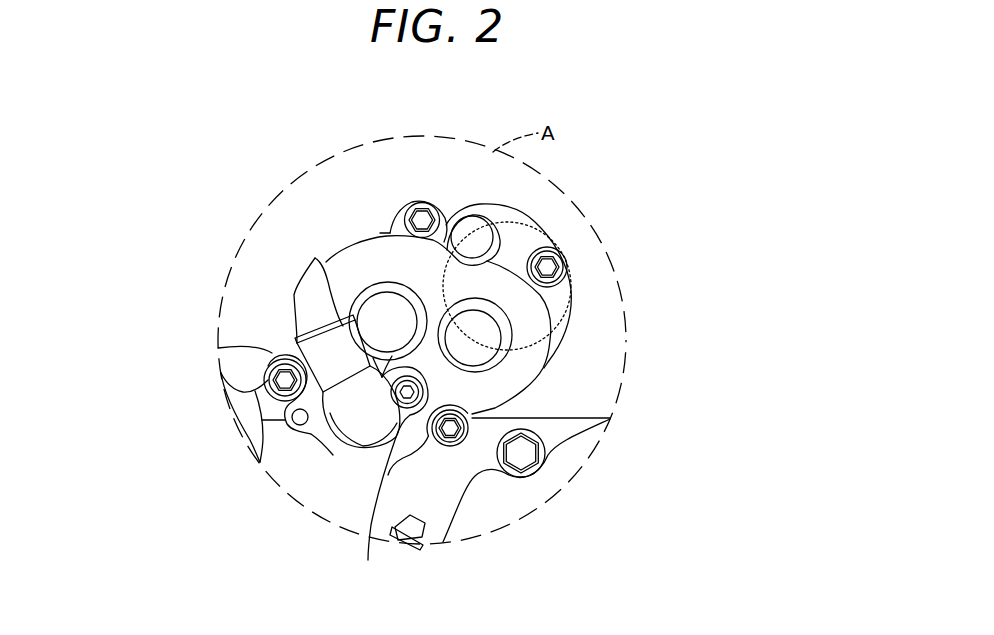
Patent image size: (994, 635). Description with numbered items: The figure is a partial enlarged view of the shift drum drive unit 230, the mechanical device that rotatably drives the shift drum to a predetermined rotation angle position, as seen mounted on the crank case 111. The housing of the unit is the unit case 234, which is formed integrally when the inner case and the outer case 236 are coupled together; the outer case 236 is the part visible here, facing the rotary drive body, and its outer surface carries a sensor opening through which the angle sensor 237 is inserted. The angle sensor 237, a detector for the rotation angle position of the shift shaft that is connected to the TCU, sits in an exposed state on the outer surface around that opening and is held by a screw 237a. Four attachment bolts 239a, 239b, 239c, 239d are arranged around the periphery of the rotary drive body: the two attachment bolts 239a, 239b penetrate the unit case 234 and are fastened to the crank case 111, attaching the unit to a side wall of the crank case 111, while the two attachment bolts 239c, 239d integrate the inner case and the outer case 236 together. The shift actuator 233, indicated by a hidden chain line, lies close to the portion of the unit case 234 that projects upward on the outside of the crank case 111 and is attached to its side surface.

The shift drum drive unit 230 is at (352, 240).
The shift actuator 233 is at (533, 228).
The unit case 234 is at (541, 367).
The outer case 236 is at (606, 297).
The angle sensor 237 is at (333, 455).
The screw 237a is at (368, 545).
The attachment bolt 239a is at (272, 353).
The attachment bolt 239b is at (450, 450).
The attachment bolt 239c is at (417, 201).
The attachment bolt 239d is at (553, 289).
The crank case 111 is at (567, 418).